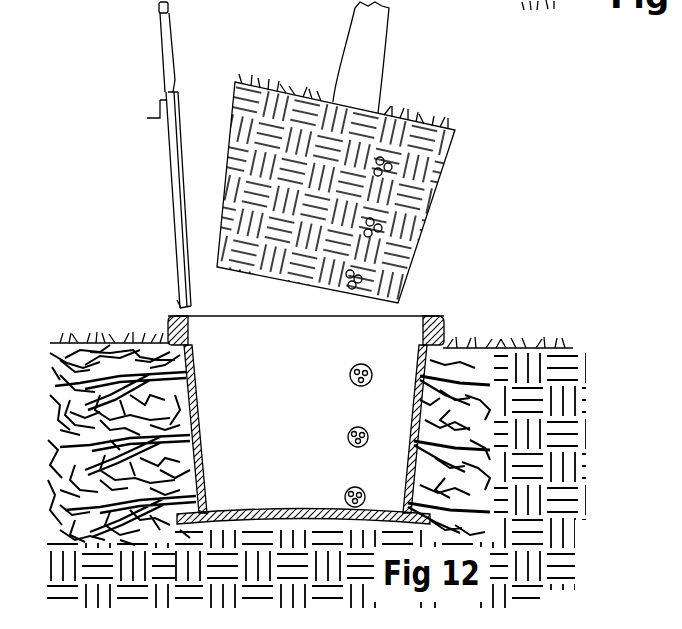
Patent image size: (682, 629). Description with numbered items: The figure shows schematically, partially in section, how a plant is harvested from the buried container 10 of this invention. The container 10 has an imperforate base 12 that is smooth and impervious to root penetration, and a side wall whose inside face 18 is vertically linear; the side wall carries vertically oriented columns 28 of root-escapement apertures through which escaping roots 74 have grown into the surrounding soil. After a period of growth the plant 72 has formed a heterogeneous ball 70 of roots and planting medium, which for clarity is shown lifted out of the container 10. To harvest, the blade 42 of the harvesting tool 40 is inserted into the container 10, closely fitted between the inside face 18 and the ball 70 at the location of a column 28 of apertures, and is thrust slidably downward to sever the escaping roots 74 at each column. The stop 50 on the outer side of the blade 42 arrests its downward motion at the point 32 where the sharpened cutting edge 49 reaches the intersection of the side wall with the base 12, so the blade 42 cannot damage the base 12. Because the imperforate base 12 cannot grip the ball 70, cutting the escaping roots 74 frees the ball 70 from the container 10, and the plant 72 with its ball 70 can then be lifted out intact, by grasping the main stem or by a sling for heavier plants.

The container 10 is at (306, 420).
The base 12 is at (245, 513).
The inside face 18 is at (195, 403).
The columns 28 is at (200, 337).
The bottom peripheral edge 32 is at (202, 493).
The harvesting tool 40 is at (133, 155).
The blade 42 is at (182, 251).
The sharpened edge 49 is at (177, 306).
The stop 50 is at (147, 118).
The ball 70 is at (431, 205).
The plant 72 is at (338, 24).
The escaping roots 74 is at (390, 220).